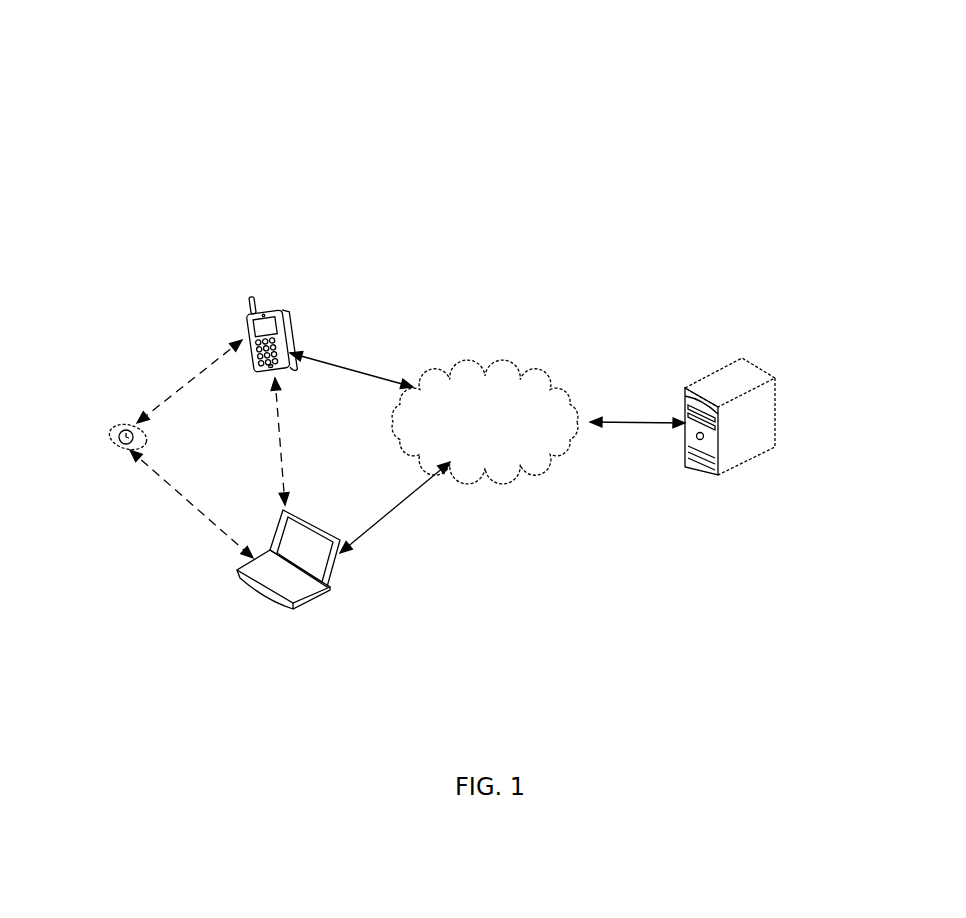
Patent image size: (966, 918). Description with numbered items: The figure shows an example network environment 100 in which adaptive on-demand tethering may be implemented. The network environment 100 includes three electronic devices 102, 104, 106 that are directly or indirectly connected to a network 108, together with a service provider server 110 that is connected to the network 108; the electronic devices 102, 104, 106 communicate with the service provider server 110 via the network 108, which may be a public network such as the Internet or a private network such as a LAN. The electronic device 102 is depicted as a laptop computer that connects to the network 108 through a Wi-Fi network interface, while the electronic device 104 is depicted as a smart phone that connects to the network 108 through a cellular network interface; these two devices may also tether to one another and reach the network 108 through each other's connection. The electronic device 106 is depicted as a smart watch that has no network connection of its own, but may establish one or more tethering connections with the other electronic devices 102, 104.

The network environment 100 is at (886, 132).
The electronic device 102 is at (310, 600).
The electronic device 104 is at (290, 318).
The electronic device 106 is at (108, 432).
The network 108 is at (491, 373).
The service provider server 110 is at (759, 372).